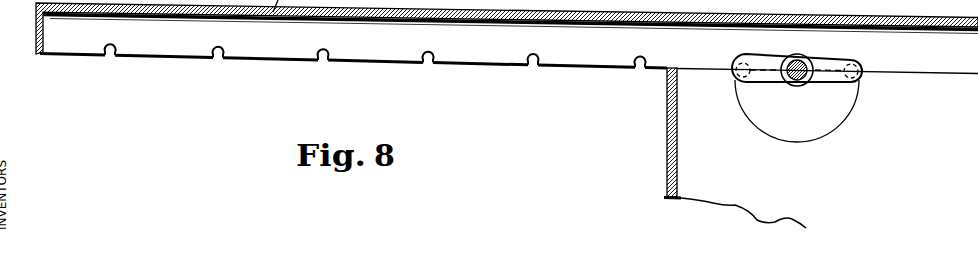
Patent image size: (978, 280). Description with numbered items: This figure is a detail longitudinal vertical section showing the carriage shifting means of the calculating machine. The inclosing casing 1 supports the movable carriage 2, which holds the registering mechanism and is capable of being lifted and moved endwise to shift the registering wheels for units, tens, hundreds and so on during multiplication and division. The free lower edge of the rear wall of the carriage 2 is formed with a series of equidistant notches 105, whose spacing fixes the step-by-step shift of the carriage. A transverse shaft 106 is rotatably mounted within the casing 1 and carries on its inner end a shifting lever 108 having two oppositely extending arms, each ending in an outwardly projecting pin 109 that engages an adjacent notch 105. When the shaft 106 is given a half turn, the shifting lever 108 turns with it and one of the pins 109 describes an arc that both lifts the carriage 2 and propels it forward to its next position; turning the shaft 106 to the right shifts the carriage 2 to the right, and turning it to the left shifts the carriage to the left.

The inclosing casing 1 is at (667, 147).
The movable carriage 2 is at (904, 40).
The notches 105 is at (323, 63).
The transverse shaft 106 is at (806, 64).
The shifting lever 108 is at (772, 78).
The pins 109 is at (863, 80).